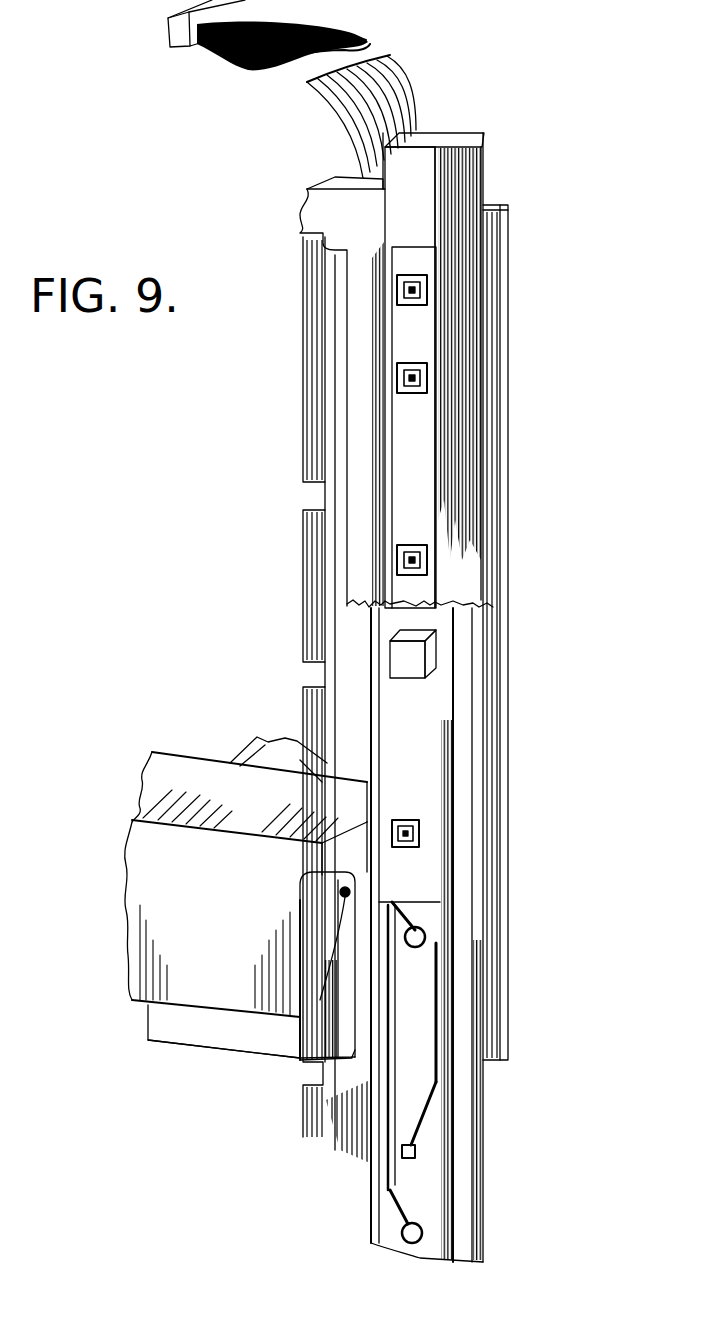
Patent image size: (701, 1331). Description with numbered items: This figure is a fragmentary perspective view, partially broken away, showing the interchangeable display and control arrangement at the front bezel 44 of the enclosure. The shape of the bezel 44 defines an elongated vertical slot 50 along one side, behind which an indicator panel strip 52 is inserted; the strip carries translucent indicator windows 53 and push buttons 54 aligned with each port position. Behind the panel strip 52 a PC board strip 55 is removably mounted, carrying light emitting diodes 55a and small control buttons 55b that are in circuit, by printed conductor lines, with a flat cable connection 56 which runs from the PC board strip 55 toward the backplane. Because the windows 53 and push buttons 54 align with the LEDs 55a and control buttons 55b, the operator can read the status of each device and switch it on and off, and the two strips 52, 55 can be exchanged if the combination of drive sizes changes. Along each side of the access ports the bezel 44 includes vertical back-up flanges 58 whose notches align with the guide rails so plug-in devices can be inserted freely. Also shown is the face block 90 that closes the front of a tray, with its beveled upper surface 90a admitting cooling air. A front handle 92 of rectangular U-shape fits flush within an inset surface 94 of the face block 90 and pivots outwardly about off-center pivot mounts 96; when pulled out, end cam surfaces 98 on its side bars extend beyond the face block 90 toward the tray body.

The bezel 44 is at (478, 425).
The elongated vertical slot 50 is at (413, 607).
The indicator panel strip 52 is at (455, 740).
The translucent indicator windows 53 is at (420, 378).
The push buttons 54 is at (437, 660).
The PC board strip 55 is at (480, 852).
The light emitting diodes 55a is at (417, 1152).
The control buttons 55b is at (423, 1230).
The flat cable connection 56 is at (224, 57).
The vertical back-up flanges 58 is at (340, 578).
The face block 90 is at (172, 1000).
The beveled upper surface 90a is at (152, 770).
The front handle 92 is at (265, 1022).
The inset surface 94 is at (218, 1010).
The pivot mounts 96 is at (348, 930).
The end cam surfaces 98 is at (318, 900).